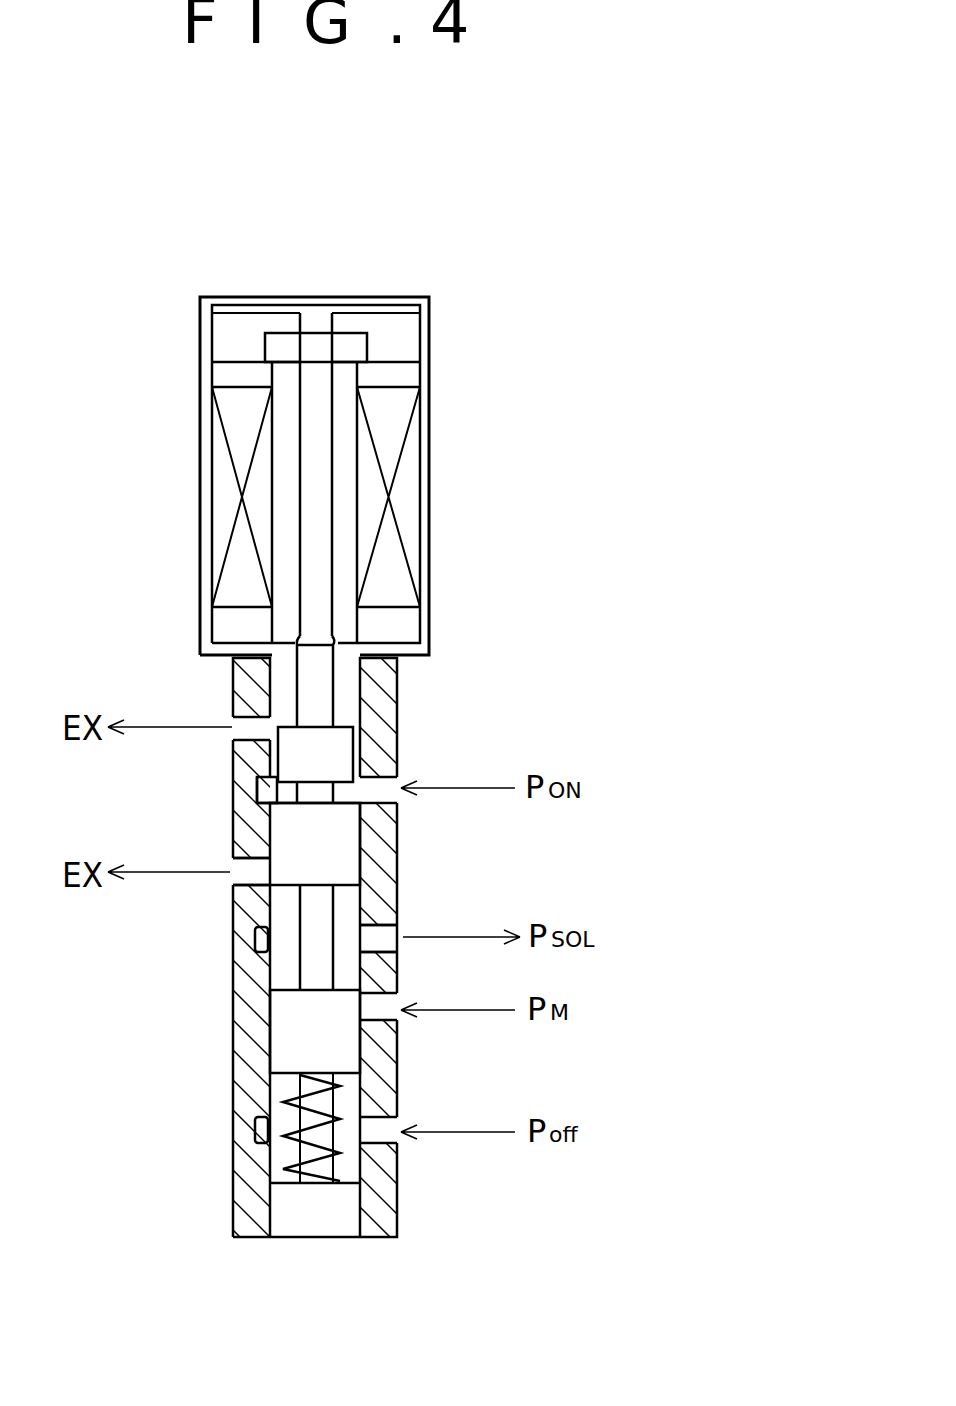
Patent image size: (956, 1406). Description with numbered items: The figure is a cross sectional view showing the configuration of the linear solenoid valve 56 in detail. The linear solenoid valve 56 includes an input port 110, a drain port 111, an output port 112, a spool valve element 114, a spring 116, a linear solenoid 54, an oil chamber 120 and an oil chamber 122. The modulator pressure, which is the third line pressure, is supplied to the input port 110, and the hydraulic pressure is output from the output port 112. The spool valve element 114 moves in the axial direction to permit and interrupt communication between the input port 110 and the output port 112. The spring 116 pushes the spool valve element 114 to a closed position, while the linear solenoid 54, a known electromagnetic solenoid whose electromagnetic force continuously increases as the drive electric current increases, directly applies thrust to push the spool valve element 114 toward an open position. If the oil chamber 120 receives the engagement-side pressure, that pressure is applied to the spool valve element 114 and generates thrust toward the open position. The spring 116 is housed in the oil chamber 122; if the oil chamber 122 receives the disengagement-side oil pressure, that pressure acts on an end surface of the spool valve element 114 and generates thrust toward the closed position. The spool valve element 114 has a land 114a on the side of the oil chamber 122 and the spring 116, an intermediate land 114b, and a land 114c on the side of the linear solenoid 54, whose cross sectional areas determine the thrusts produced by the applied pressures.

The linear solenoid 54 is at (412, 484).
The linear solenoid valve 56 is at (614, 610).
The input port 110 is at (398, 1015).
The drain port 111 is at (243, 870).
The output port 112 is at (398, 933).
The spool valve element 114 is at (310, 943).
The land 114a is at (287, 1040).
The intermediate land 114b is at (338, 838).
The land 114c is at (337, 758).
The spring 116 is at (292, 1146).
The oil chamber 120 is at (270, 790).
The oil chamber 122 is at (283, 1195).